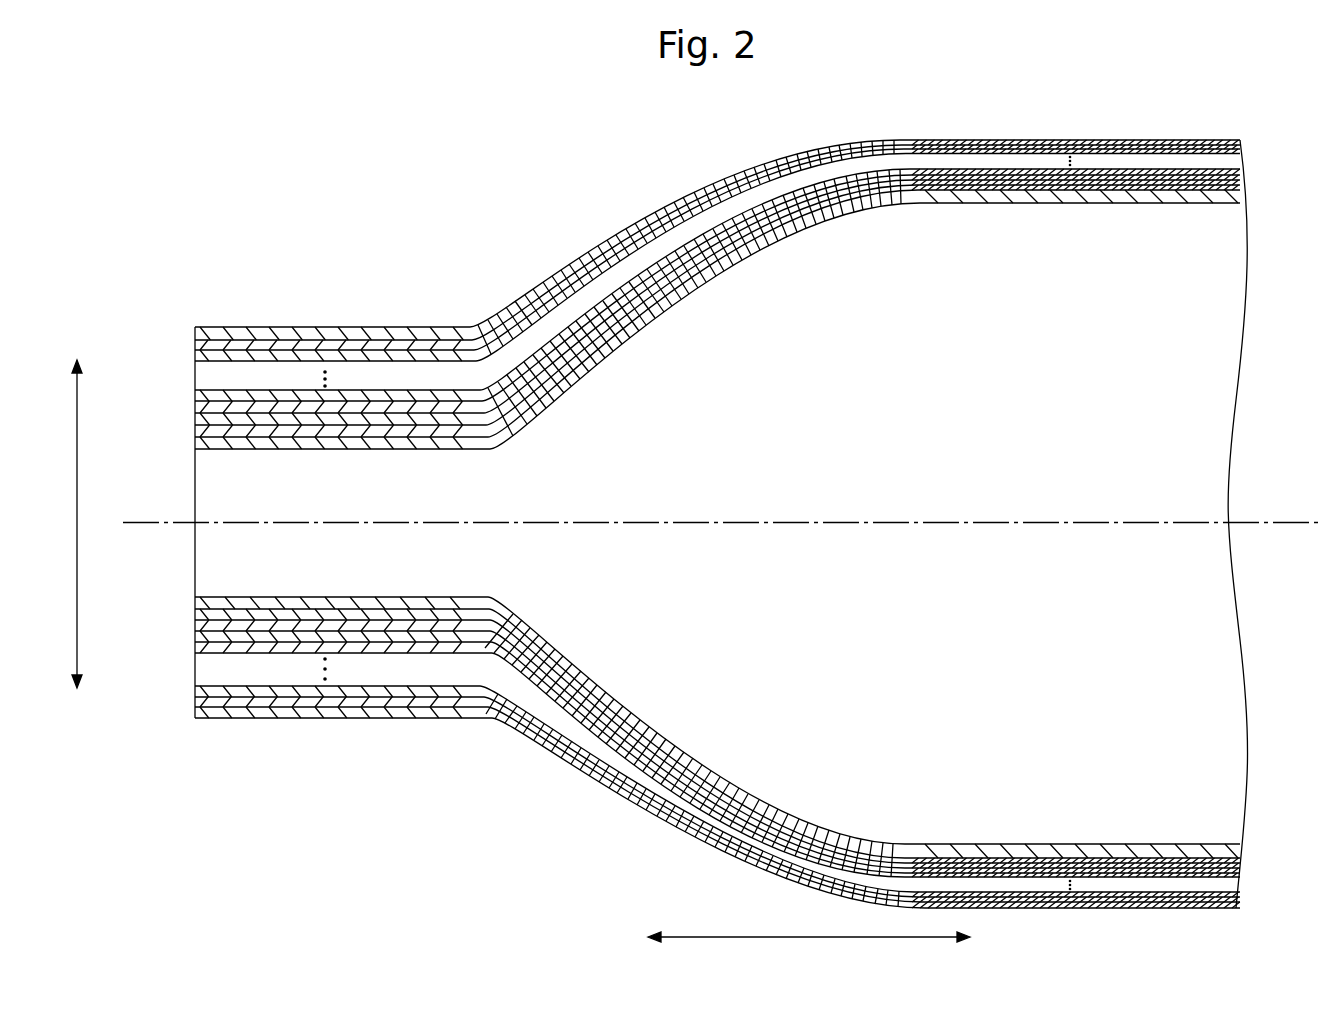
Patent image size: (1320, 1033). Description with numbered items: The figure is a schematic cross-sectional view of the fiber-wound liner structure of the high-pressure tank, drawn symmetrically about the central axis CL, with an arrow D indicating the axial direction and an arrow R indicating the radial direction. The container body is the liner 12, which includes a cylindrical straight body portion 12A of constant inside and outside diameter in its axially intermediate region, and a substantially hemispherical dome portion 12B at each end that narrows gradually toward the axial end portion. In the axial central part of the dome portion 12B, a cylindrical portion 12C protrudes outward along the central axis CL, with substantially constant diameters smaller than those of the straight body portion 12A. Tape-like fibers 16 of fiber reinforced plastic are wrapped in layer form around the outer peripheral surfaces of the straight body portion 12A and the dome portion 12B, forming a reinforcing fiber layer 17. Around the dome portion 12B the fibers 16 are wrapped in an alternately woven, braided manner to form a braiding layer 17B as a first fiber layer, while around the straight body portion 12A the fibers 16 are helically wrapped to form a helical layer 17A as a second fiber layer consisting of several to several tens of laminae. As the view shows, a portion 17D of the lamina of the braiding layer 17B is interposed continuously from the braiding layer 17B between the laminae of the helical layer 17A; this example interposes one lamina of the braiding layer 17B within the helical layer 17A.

The liner 12 is at (662, 281).
The straight body portion 12A is at (1068, 204).
The dome portion 12B is at (650, 312).
The cylindrical portion 12C is at (338, 452).
The fiber 16 is at (1188, 141).
The fiber layer 17 is at (331, 344).
The helical layer 17A is at (1098, 141).
The braiding layer 17B is at (565, 265).
The portion of the lamina of the braiding layer 17D is at (967, 167).
The central axis CL is at (145, 522).
The arrow R is at (78, 583).
The arrow D is at (655, 934).